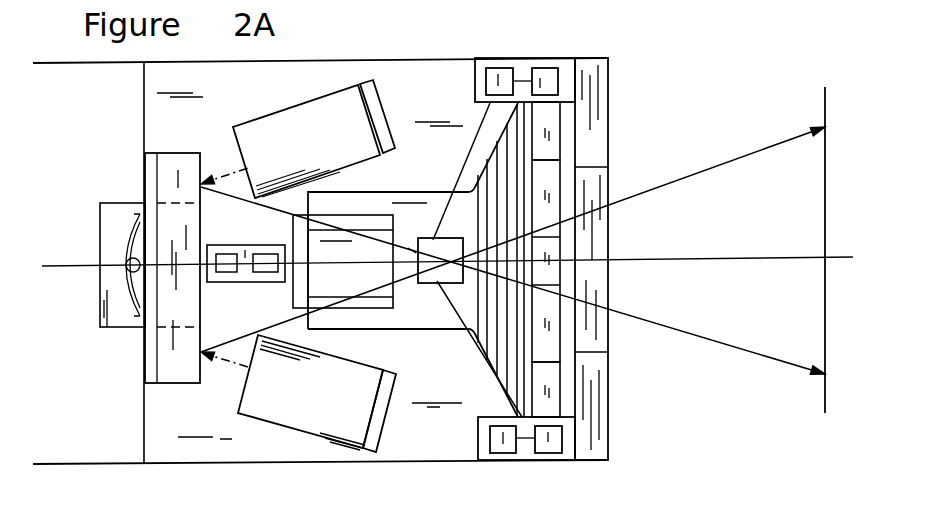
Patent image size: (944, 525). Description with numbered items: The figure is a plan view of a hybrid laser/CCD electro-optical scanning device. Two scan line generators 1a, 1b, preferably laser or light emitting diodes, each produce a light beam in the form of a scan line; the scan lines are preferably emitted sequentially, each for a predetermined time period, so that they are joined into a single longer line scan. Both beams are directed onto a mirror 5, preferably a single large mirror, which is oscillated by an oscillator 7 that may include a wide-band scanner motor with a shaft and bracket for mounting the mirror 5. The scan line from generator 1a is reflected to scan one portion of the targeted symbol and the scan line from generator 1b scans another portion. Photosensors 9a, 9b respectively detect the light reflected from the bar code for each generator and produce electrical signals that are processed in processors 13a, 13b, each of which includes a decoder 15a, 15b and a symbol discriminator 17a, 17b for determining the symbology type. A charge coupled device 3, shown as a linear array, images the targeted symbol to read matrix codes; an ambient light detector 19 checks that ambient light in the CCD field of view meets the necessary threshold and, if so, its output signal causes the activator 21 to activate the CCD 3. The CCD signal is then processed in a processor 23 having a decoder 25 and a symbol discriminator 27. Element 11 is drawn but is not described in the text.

The scan line generator 1a is at (270, 126).
The scan line generator 1b is at (280, 408).
The charge coupled device 3 is at (433, 313).
The mirror 5 is at (187, 370).
The oscillator 7 is at (153, 343).
The photosensor 9a is at (548, 124).
The photosensor 9b is at (548, 390).
The detector substrate 11 is at (575, 180).
The processor 13a is at (520, 70).
The processor 13b is at (528, 453).
The decoder 15a is at (548, 82).
The decoder 15b is at (556, 437).
The symbol discriminator 17a is at (493, 70).
The symbol discriminator 17b is at (508, 448).
The ambient light detector 19 is at (548, 252).
The activator 21 is at (432, 243).
The processor 23 is at (244, 274).
The decoder 25 is at (272, 258).
The symbol discriminator 27 is at (227, 258).